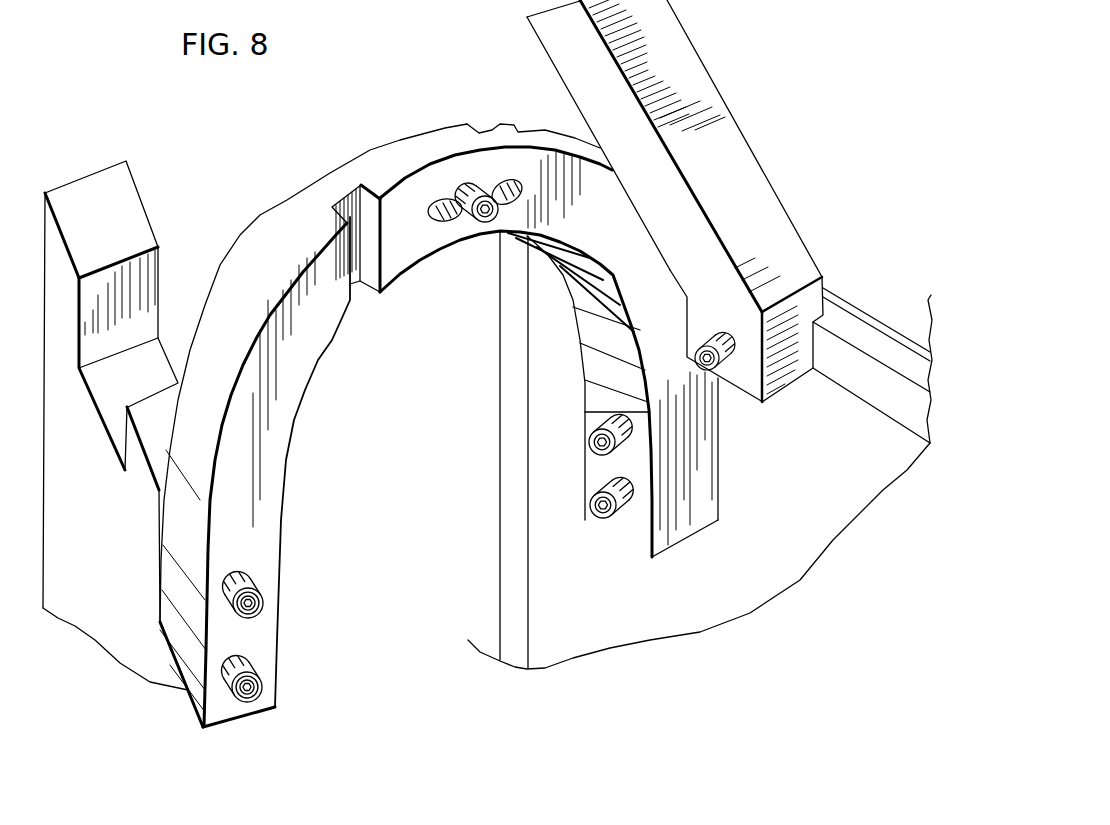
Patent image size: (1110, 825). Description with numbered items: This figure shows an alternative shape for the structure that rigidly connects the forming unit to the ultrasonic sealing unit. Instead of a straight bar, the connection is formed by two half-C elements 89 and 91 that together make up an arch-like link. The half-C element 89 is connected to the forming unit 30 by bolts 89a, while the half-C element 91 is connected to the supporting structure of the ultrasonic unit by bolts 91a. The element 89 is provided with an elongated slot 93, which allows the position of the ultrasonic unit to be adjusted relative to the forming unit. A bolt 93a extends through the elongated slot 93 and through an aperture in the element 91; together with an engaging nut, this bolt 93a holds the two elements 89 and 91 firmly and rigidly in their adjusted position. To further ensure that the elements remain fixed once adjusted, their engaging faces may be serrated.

The forming unit 30 is at (872, 353).
The half-C element 89 is at (549, 309).
The bolts 89a is at (585, 498).
The half-C element 91 is at (313, 425).
The bolts 91a is at (287, 636).
The elongated slot 93 is at (477, 232).
The bolt 93a is at (534, 205).